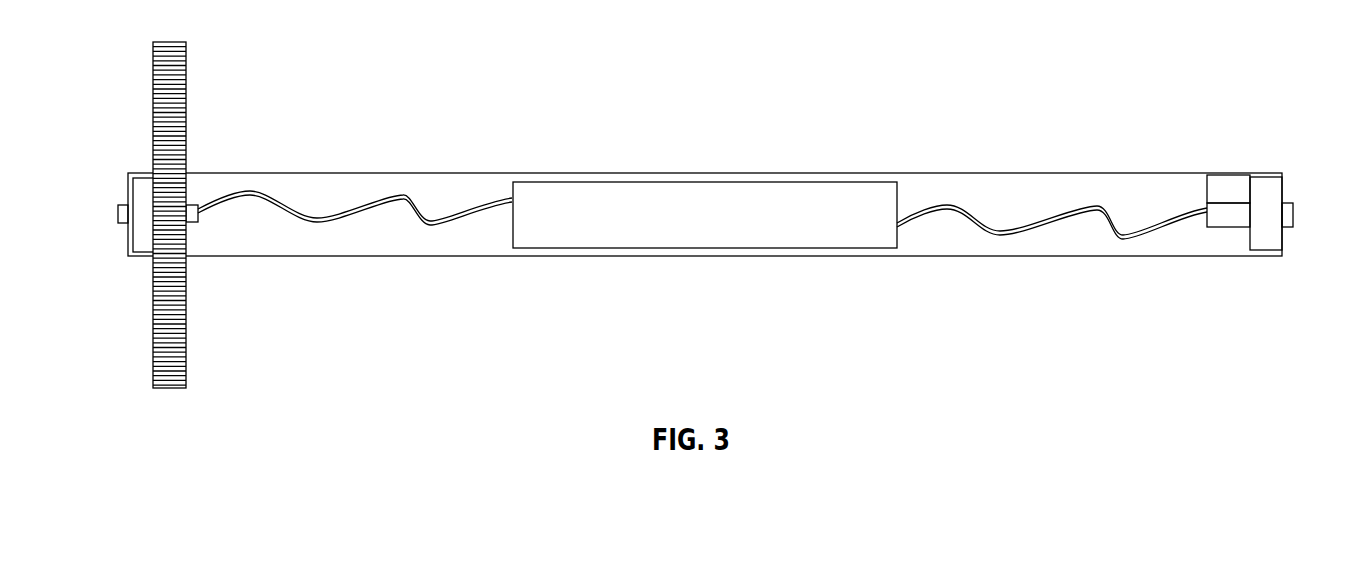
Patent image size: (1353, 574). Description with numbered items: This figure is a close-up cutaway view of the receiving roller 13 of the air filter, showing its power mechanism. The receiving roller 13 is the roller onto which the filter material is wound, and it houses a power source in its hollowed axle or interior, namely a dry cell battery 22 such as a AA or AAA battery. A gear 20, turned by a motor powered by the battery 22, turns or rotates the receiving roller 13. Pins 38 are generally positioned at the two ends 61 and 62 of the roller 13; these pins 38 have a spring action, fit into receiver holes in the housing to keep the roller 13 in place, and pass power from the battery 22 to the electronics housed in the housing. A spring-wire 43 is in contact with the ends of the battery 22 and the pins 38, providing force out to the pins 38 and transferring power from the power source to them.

The receiving roller 13 is at (1097, 173).
The gear 20 is at (187, 93).
The battery 22 is at (622, 247).
The pins 38 is at (118, 213).
The spring-wire 43 is at (399, 193).
The end of roller 61 is at (143, 243).
The end of roller 62 is at (1283, 190).